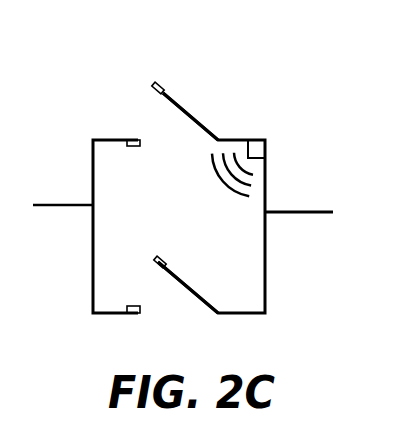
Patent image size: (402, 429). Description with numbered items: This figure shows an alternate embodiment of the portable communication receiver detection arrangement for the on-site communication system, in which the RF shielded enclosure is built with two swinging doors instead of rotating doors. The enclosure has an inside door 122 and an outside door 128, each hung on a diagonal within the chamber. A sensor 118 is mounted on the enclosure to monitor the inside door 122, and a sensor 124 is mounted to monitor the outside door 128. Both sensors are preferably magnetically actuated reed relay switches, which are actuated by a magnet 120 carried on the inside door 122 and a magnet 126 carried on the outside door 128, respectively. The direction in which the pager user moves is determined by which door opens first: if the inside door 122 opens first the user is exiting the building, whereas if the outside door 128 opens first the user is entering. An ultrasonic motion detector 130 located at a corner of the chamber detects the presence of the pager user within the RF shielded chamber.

The sensor 118 is at (135, 138).
The magnet 120 is at (158, 85).
The inside door 122 is at (150, 138).
The sensor 124 is at (133, 318).
The magnet 126 is at (160, 258).
The outside door 128 is at (150, 308).
The ultrasonic motion detector 130 is at (262, 140).